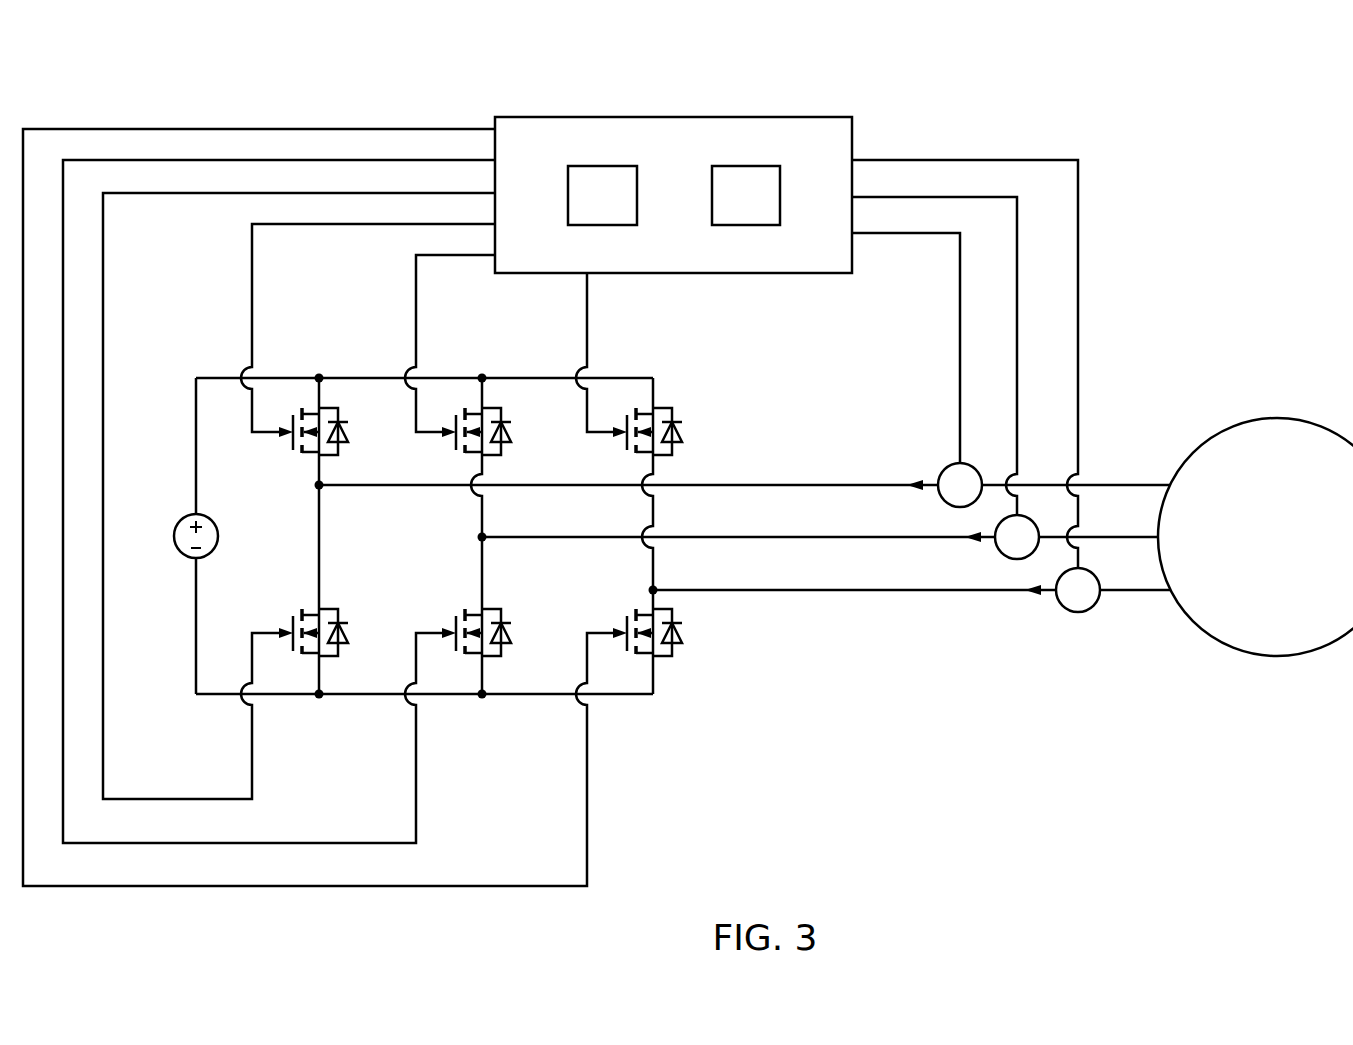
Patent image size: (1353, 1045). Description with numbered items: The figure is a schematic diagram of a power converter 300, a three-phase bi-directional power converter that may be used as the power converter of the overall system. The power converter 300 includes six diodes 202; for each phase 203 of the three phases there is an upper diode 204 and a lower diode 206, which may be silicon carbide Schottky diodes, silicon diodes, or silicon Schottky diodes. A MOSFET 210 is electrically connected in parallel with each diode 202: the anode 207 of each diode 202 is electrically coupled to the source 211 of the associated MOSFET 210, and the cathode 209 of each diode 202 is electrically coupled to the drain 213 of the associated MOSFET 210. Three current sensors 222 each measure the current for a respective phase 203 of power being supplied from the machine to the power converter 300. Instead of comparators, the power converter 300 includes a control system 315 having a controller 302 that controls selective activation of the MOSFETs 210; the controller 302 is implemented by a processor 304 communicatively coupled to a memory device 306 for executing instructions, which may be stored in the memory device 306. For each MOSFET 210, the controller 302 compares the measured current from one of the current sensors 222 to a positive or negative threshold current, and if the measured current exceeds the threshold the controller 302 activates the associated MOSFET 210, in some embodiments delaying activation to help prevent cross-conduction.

The power converter 300 is at (277, 74).
The controller 302 is at (613, 117).
The control system 315 is at (727, 100).
The processor 304 is at (623, 208).
The memory device 306 is at (768, 208).
The drain 213 is at (317, 400).
The cathode 209 is at (335, 402).
The diode 202 is at (686, 637).
The upper diode 204 is at (674, 458).
The lower diode 206 is at (686, 650).
The MOSFET 210 is at (628, 620).
The source 211 is at (312, 460).
The anode 207 is at (348, 485).
The phase 203 is at (825, 588).
The current sensor 222 is at (1093, 606).